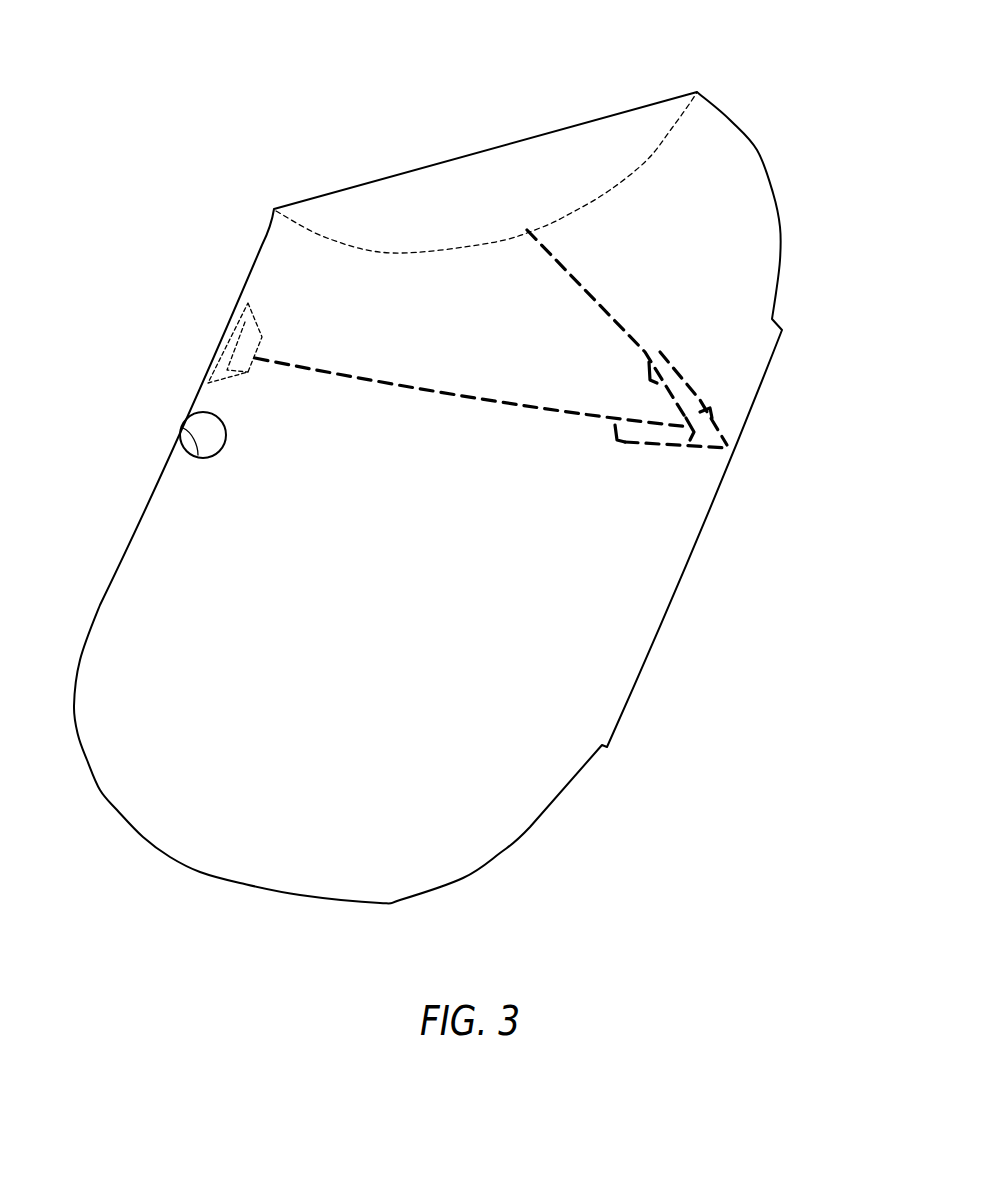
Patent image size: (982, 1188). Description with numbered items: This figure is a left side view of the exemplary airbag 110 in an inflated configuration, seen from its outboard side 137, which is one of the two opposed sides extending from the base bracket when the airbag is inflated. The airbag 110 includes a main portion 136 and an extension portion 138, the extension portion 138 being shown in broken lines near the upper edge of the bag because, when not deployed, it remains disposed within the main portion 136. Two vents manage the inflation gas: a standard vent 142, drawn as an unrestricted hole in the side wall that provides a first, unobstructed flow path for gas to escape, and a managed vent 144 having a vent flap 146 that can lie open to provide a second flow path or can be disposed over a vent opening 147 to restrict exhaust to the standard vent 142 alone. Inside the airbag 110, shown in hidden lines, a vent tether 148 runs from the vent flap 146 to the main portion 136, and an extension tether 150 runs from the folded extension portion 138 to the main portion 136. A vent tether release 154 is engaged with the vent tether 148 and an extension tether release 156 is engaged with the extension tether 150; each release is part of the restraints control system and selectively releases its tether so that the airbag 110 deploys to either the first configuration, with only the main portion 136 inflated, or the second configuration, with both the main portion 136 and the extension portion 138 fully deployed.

The airbag 110 is at (413, 460).
The main portion 136 is at (137, 515).
The outboard side 137 is at (140, 574).
The extension portion 138 is at (673, 137).
The standard vent 142 is at (198, 453).
The managed vent 144 is at (233, 345).
The vent flap 146 is at (252, 375).
The vent opening 147 is at (213, 377).
The vent tether 148 is at (378, 377).
The extension tether 150 is at (580, 282).
The vent tether release 154 is at (642, 452).
The extension tether release 156 is at (668, 356).